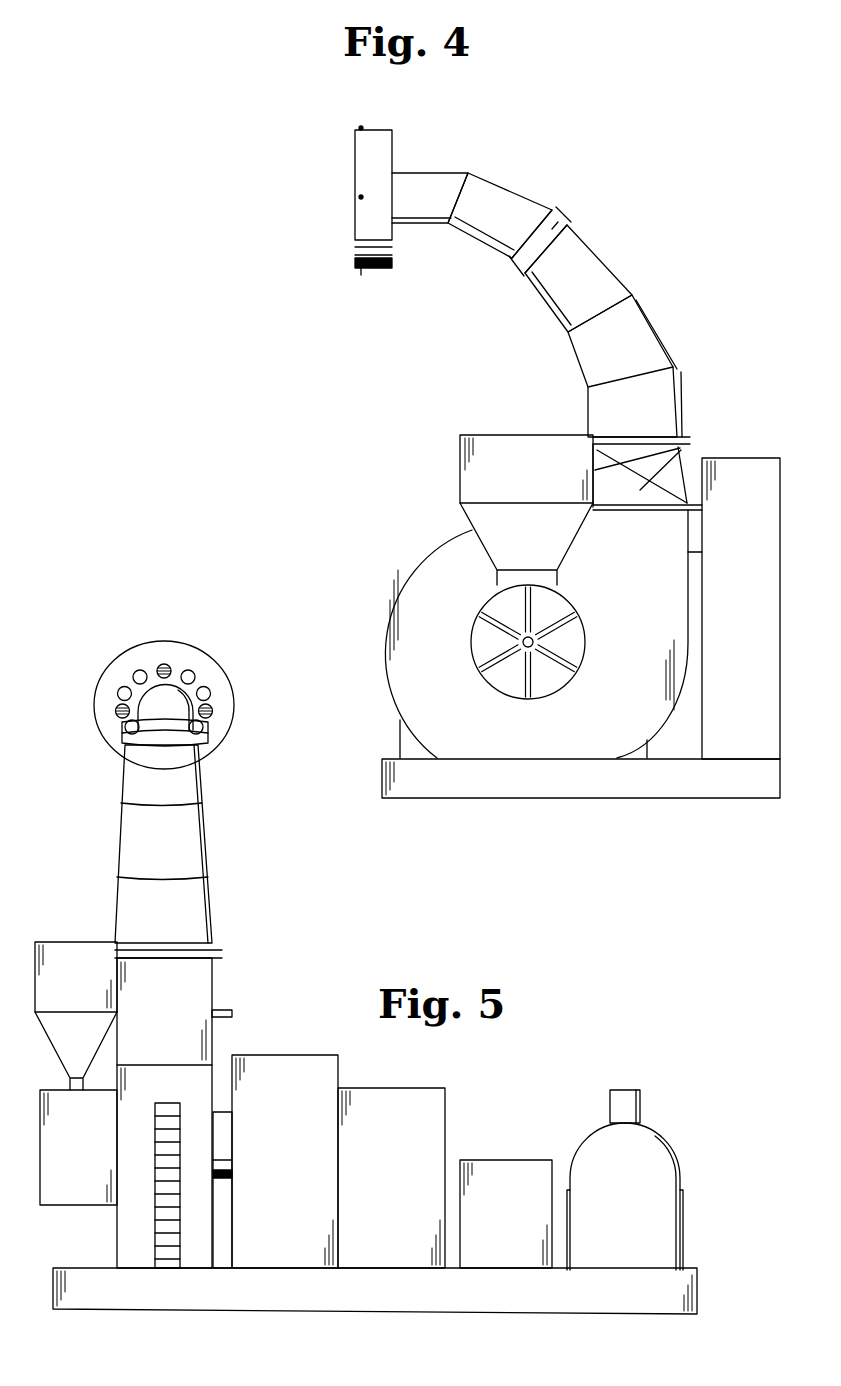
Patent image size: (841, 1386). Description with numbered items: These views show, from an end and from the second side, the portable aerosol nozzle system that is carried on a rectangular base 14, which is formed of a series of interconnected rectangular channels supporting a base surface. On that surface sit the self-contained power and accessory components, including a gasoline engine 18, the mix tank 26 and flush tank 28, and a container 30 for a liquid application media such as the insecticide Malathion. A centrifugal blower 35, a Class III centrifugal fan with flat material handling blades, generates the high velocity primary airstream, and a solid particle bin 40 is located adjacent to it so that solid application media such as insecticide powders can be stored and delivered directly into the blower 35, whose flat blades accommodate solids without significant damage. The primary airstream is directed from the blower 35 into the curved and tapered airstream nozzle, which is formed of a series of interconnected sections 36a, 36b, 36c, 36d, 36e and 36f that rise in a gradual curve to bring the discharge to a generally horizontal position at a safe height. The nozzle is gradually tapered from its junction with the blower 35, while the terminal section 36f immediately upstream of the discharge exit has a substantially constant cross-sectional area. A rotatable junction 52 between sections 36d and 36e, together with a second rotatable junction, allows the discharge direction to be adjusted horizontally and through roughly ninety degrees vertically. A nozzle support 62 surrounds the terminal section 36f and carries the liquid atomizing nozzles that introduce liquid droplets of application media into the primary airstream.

In FIG. 4, the rectangular base 14 is at (600, 792).
In FIG. 5, the rectangular base 14 is at (397, 1304).
In FIG. 5, the gasoline engine 18 is at (410, 1151).
In FIG. 5, the mix tank 26 is at (300, 1151).
In FIG. 5, the flush tank 28 is at (637, 1222).
In FIG. 5, the container 30 is at (520, 1222).
In FIG. 4, the centrifugal blower 35 is at (566, 598).
In FIG. 5, the centrifugal blower 35 is at (97, 1154).
In FIG. 4, the airstream nozzle section 36a is at (645, 488).
In FIG. 4, the airstream nozzle section 36b is at (654, 416).
In FIG. 4, the airstream nozzle section 36c is at (632, 361).
In FIG. 4, the airstream nozzle section 36d is at (597, 287).
In FIG. 4, the airstream nozzle section 36e is at (511, 222).
In FIG. 4, the terminal airstream nozzle section 36f is at (446, 207).
In FIG. 4, the solid particle bin 40 is at (540, 482).
In FIG. 5, the solid particle bin 40 is at (92, 986).
In FIG. 4, the junction 52 is at (565, 220).
In FIG. 4, the nozzle support 62 is at (362, 130).